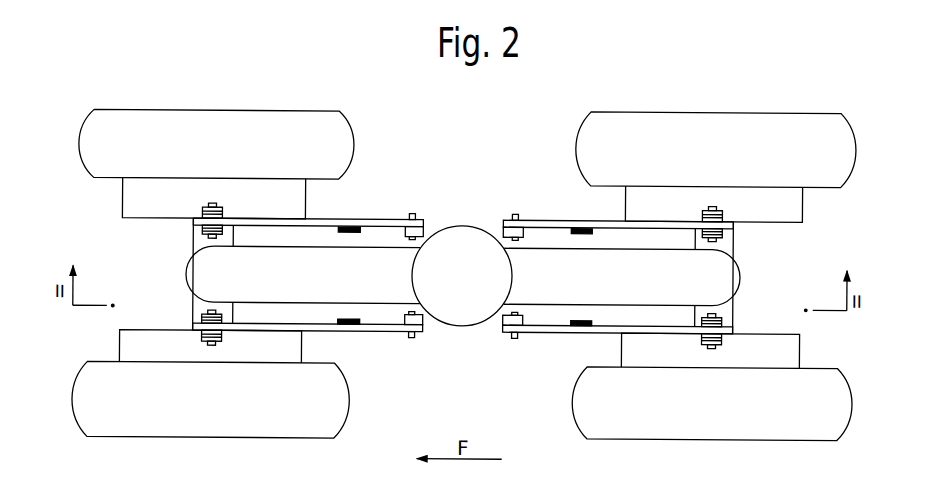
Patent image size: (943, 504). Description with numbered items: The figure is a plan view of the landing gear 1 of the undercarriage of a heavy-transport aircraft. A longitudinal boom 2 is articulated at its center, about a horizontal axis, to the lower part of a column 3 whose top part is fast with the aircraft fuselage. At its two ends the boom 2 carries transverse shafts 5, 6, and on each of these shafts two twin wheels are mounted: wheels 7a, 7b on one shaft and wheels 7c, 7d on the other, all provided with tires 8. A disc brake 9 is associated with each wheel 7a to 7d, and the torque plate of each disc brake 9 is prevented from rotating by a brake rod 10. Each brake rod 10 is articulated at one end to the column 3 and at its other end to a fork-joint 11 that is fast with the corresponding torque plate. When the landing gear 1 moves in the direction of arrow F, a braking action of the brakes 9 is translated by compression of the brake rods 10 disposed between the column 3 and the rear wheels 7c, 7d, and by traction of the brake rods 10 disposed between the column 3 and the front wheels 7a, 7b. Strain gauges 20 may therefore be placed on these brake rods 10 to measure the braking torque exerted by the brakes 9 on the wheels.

The landing gear 1 is at (445, 190).
The longitudinal boom 2 is at (291, 286).
The column 3 is at (455, 281).
The transverse shaft 5 is at (195, 246).
The transverse shaft 6 is at (733, 241).
The twin wheel 7a is at (263, 114).
The twin wheel 7b is at (231, 440).
The twin wheel 7c is at (670, 113).
The twin wheel 7d is at (763, 443).
The tire 8 is at (463, 282).
The disc brake 9 is at (287, 199).
The brake rod 10 is at (387, 222).
The fork-joint 11 is at (202, 212).
The strain gauge 20 is at (351, 228).